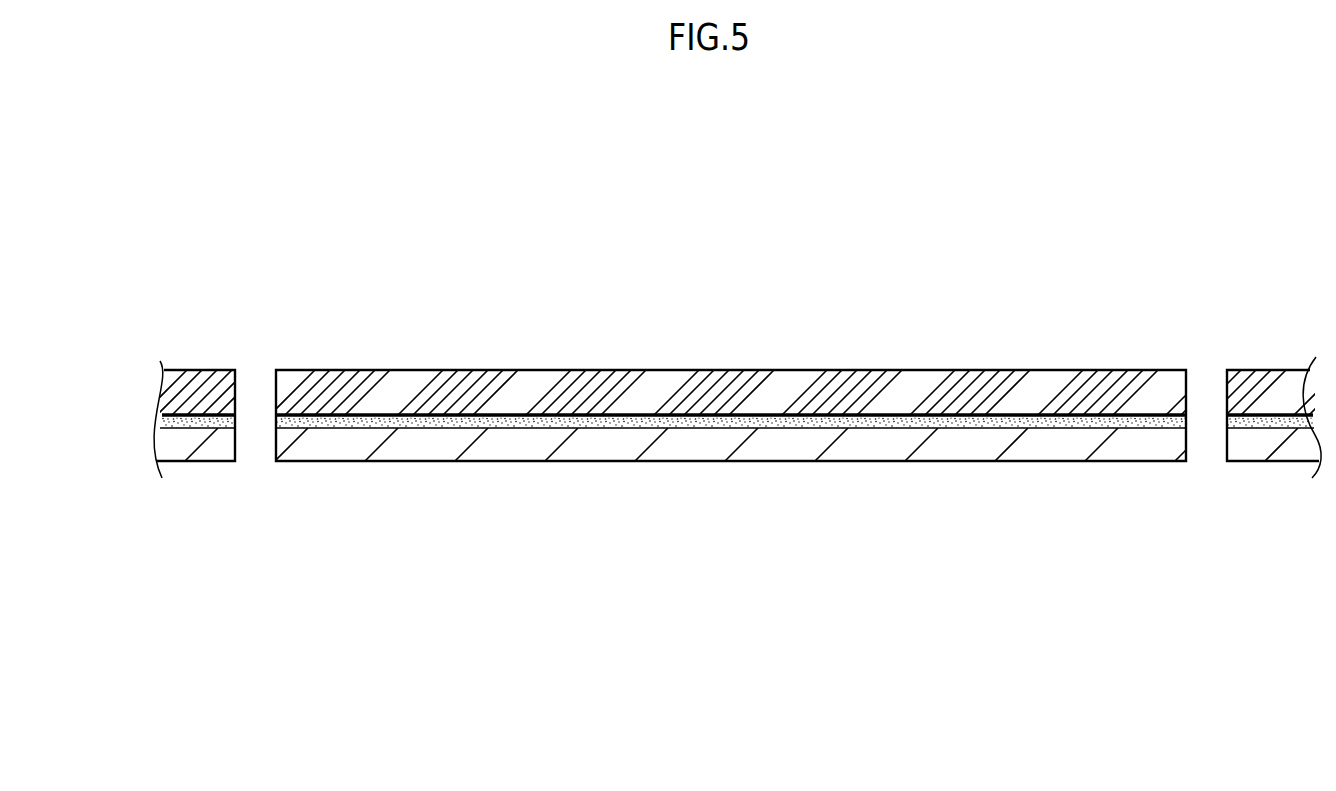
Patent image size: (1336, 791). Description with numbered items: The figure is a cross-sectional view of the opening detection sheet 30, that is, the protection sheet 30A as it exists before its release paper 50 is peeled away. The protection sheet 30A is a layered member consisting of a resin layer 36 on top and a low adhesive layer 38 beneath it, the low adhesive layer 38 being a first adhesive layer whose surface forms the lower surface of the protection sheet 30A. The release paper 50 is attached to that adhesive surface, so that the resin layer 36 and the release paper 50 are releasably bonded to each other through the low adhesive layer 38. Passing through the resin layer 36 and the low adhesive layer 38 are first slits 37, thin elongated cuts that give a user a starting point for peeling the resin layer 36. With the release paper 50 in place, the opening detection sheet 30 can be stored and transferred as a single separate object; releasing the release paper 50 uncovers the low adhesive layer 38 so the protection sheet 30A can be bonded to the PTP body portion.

The opening detection sheet 30 is at (773, 157).
The protection sheet 30A is at (80, 315).
The resin layer 36 is at (170, 387).
The first slit 37 is at (237, 398).
The low adhesive layer 38 is at (167, 421).
The release paper 50 is at (165, 450).